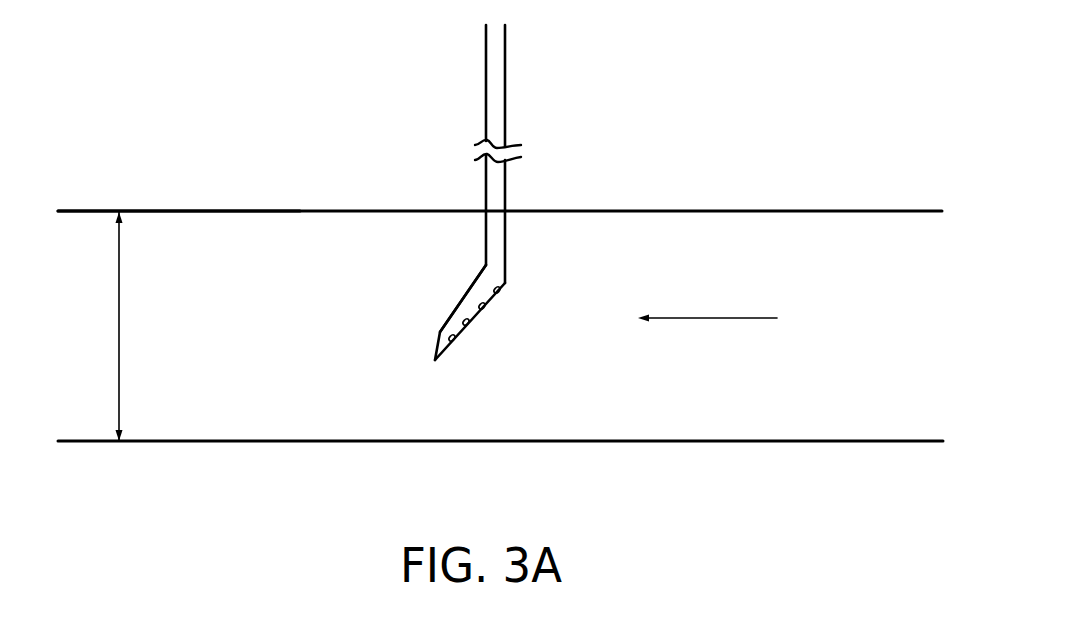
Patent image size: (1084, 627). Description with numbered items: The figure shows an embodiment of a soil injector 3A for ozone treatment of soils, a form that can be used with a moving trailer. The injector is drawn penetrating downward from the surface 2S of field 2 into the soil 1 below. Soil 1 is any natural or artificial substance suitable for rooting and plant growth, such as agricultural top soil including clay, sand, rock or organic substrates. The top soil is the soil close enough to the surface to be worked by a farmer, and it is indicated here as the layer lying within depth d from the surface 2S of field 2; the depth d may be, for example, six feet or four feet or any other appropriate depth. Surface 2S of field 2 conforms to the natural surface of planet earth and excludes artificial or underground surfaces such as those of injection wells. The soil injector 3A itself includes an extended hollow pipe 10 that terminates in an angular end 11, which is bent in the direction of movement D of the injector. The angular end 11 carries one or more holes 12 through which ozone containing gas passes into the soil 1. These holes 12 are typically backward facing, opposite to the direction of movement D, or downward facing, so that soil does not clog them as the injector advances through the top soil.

The soil 1 is at (218, 287).
The field 2 is at (222, 127).
The surface of field 2S is at (698, 210).
The soil injector 3A is at (522, 83).
The extended hollow pipe 10 is at (502, 233).
The angular end 11 is at (477, 291).
The holes 12 is at (473, 322).
The depth d is at (109, 326).
The direction of movement D is at (707, 304).